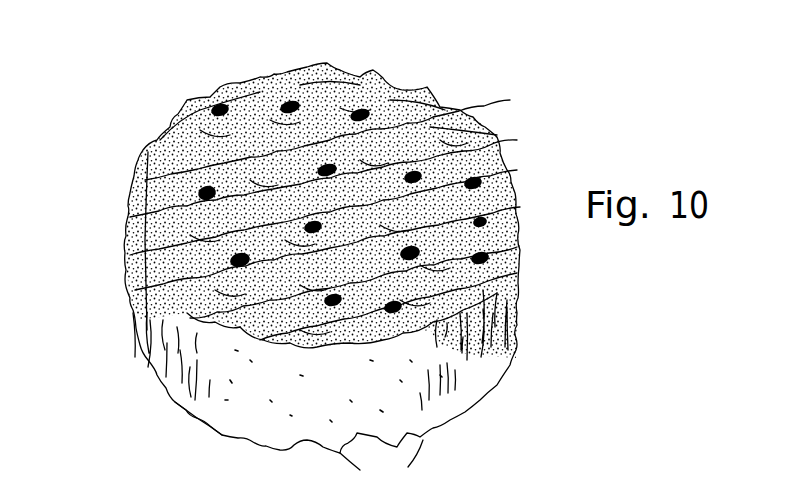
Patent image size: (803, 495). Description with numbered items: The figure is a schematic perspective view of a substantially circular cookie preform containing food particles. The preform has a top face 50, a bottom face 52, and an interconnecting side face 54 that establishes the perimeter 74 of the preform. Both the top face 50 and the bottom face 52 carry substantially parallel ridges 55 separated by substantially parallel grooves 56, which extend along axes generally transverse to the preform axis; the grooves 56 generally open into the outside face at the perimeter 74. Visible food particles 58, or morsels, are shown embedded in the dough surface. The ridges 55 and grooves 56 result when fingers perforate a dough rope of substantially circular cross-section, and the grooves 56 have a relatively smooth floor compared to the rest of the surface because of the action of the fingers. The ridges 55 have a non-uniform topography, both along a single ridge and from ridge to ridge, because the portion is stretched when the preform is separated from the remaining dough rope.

The top face 50 is at (388, 124).
The bottom face 52 is at (207, 433).
The side face 54 is at (423, 357).
The ridges 55 is at (518, 193).
The grooves 56 is at (215, 317).
The food particles 58 is at (293, 97).
The perimeter 74 is at (142, 160).